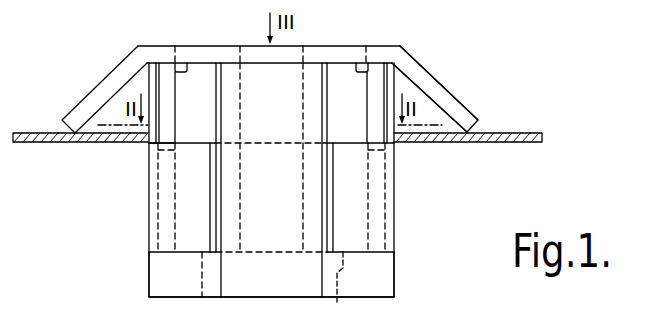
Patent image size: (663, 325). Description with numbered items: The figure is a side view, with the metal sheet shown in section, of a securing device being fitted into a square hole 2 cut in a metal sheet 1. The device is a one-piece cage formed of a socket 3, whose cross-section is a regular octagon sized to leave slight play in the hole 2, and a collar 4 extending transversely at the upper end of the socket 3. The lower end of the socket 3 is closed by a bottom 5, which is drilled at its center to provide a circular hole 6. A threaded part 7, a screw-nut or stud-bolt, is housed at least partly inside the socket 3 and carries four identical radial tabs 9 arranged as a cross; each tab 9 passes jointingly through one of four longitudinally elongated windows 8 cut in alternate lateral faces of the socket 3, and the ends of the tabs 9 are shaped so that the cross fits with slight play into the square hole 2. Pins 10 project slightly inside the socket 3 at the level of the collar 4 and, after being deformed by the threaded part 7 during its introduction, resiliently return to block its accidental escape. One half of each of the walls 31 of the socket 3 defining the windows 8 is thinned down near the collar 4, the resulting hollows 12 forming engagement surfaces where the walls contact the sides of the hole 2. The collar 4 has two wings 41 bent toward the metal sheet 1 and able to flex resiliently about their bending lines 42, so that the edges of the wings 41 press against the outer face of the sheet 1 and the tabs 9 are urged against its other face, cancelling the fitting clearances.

The metal sheet 1 is at (517, 133).
The square hole 2 is at (397, 143).
The socket 3 is at (146, 80).
The collar 4 is at (326, 51).
The wings 41 is at (446, 101).
The bending lines 42 is at (397, 56).
The walls of socket 31 is at (393, 86).
The bottom 5 is at (168, 269).
The circular hole 6 is at (332, 288).
The threaded part 7 is at (199, 141).
The windows 8 is at (329, 93).
The radial tabs 9 is at (377, 222).
The pins 10 is at (183, 63).
The hollows 12 is at (150, 144).